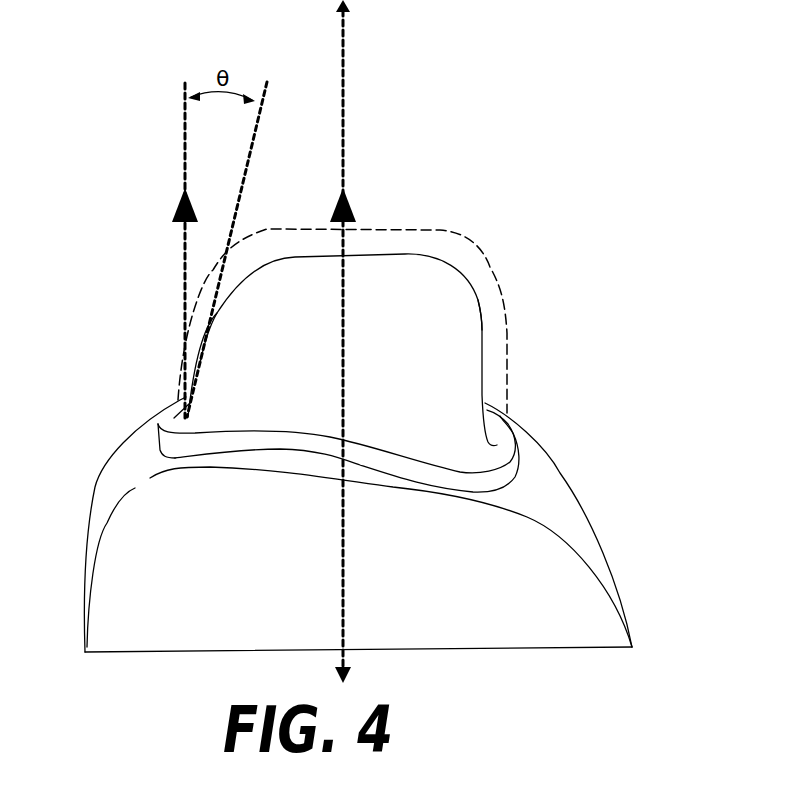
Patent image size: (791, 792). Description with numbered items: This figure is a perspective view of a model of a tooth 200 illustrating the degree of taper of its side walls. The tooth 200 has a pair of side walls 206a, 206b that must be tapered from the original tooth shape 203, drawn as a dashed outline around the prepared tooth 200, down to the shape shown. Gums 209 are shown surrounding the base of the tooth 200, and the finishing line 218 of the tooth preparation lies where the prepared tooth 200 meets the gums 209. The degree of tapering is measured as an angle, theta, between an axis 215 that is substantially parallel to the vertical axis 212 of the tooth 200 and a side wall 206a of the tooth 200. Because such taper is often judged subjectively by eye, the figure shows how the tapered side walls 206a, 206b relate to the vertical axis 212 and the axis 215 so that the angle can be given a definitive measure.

The tooth 200 is at (483, 353).
The original tooth shape 203 is at (502, 308).
The side wall 206a is at (226, 316).
The side wall 206b is at (470, 329).
The gums 209 is at (590, 507).
The vertical axis 212 is at (343, 72).
The axis 215 is at (185, 138).
The finishing line 218 is at (166, 426).